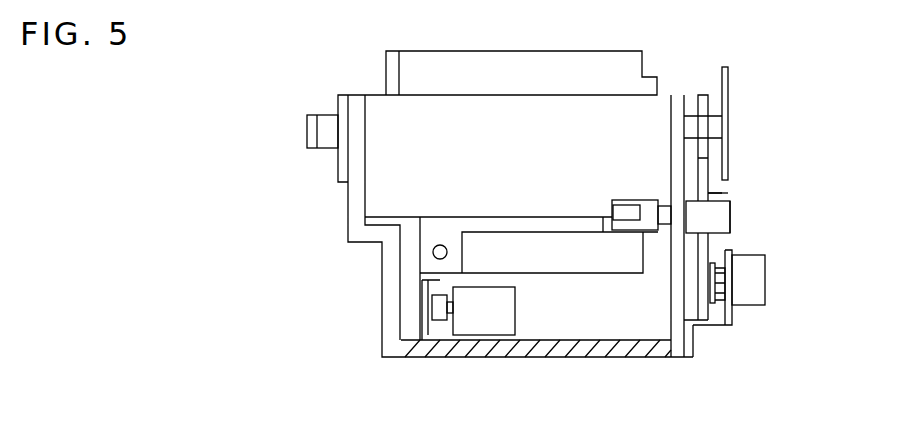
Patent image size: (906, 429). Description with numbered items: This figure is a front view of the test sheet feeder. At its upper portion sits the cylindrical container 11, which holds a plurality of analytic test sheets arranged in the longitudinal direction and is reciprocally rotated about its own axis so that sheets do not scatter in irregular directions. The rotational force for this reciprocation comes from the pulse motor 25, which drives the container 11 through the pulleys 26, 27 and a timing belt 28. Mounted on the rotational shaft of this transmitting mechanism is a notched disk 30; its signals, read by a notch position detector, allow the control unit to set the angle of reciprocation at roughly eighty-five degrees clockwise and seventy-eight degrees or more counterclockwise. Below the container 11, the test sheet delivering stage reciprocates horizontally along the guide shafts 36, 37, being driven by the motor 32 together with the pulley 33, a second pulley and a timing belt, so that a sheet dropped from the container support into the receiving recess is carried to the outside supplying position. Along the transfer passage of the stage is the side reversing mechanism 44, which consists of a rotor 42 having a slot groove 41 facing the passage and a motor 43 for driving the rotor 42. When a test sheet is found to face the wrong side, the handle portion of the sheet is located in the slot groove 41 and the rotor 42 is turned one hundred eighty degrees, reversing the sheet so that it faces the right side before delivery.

The cylindrical container 11 is at (622, 50).
The pulse motor 25 is at (758, 302).
The pulley 26 is at (713, 303).
The pulley 27 is at (702, 93).
The timing belt 28 is at (710, 193).
The notched disk 30 is at (729, 100).
The motor 32 is at (483, 335).
The pulley 33 is at (425, 342).
The guide shaft 36 is at (433, 255).
The guide shaft 37 is at (610, 272).
The slot groove 41 is at (620, 202).
The rotor 42 is at (655, 200).
The motor 43 is at (728, 229).
The side reversing mechanism 44 is at (738, 210).